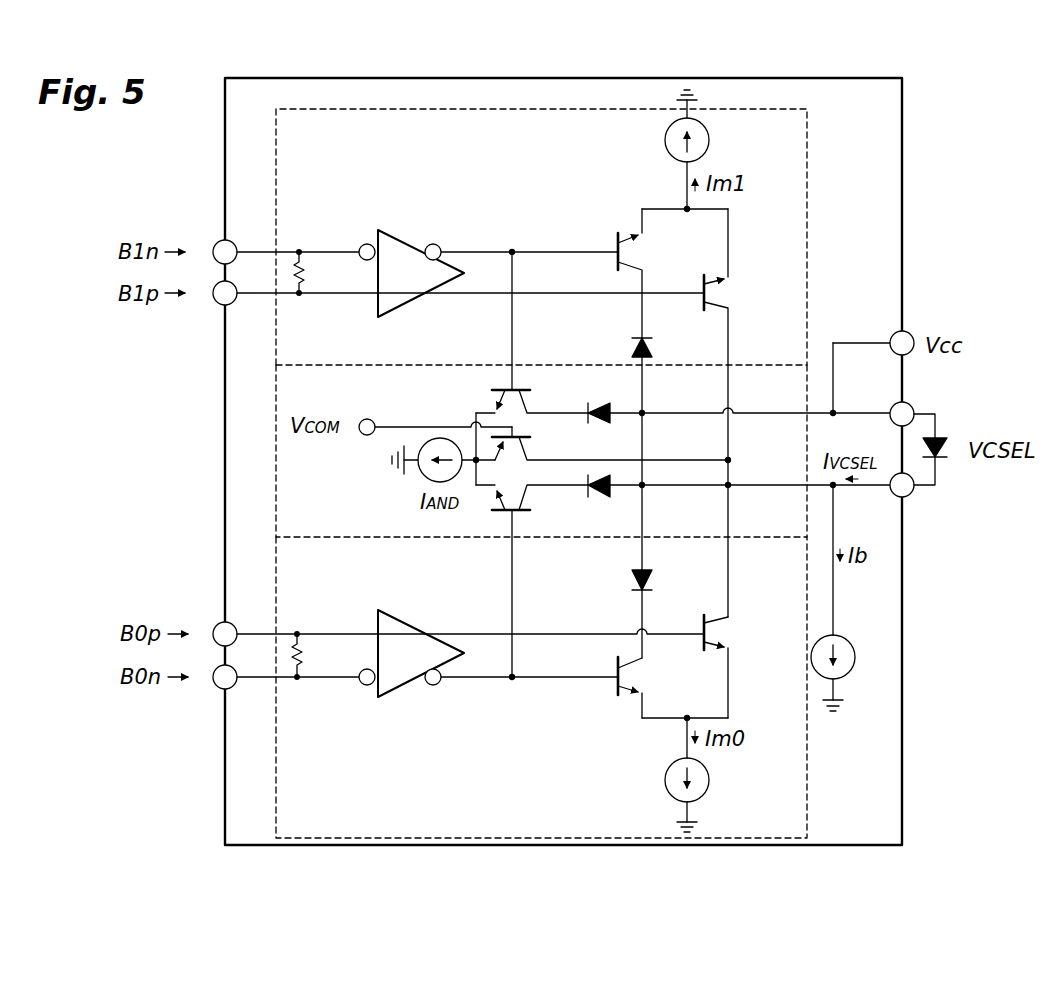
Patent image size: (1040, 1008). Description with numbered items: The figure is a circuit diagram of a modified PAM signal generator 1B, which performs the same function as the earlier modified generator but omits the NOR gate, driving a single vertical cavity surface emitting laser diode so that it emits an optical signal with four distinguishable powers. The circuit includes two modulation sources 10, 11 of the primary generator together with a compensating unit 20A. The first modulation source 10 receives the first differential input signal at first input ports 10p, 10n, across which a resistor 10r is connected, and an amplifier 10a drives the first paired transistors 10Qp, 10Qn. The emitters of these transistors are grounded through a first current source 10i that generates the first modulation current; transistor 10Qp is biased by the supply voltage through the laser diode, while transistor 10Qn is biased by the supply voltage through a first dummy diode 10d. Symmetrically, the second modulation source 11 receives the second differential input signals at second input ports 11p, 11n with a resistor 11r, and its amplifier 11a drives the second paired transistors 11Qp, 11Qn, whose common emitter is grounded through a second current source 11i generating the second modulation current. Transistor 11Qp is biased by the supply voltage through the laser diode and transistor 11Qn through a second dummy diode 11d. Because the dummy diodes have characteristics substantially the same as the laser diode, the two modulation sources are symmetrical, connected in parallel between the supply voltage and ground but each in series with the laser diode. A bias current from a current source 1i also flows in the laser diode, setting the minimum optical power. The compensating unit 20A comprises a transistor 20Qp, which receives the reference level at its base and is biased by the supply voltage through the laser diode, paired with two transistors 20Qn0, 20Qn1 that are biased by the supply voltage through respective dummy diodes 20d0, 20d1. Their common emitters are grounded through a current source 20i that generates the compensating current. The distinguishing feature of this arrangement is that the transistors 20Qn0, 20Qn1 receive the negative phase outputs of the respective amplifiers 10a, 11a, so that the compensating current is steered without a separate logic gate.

The PAM signal generator 1B is at (960, 160).
The modulation source 11 is at (276, 344).
The compensating unit 20A is at (276, 445).
The modulation source 10 is at (276, 552).
The second input port 11n is at (216, 243).
The second input port 11p is at (216, 303).
The first input port 10p is at (216, 625).
The first input port 10n is at (216, 687).
The resistor 11r is at (308, 270).
The amplifier 11a is at (405, 252).
The second current source 11i is at (710, 143).
The transistor 11Qn is at (637, 254).
The transistor 11Qp is at (718, 296).
The second dummy diode 11d is at (655, 346).
The transistor 20Qn1 is at (520, 392).
The transistor 20Qp is at (515, 455).
The transistor 20Qn0 is at (517, 512).
The current source 20i is at (440, 438).
The dummy diode 20d1 is at (612, 410).
The dummy diode 20d0 is at (612, 490).
The current source 1i is at (848, 645).
The resistor 10r is at (305, 655).
The amplifier 10a is at (395, 626).
The first dummy diode 10d is at (628, 580).
The transistor 10Qp is at (718, 632).
The transistor 10Qn is at (637, 677).
The first current source 10i is at (665, 785).